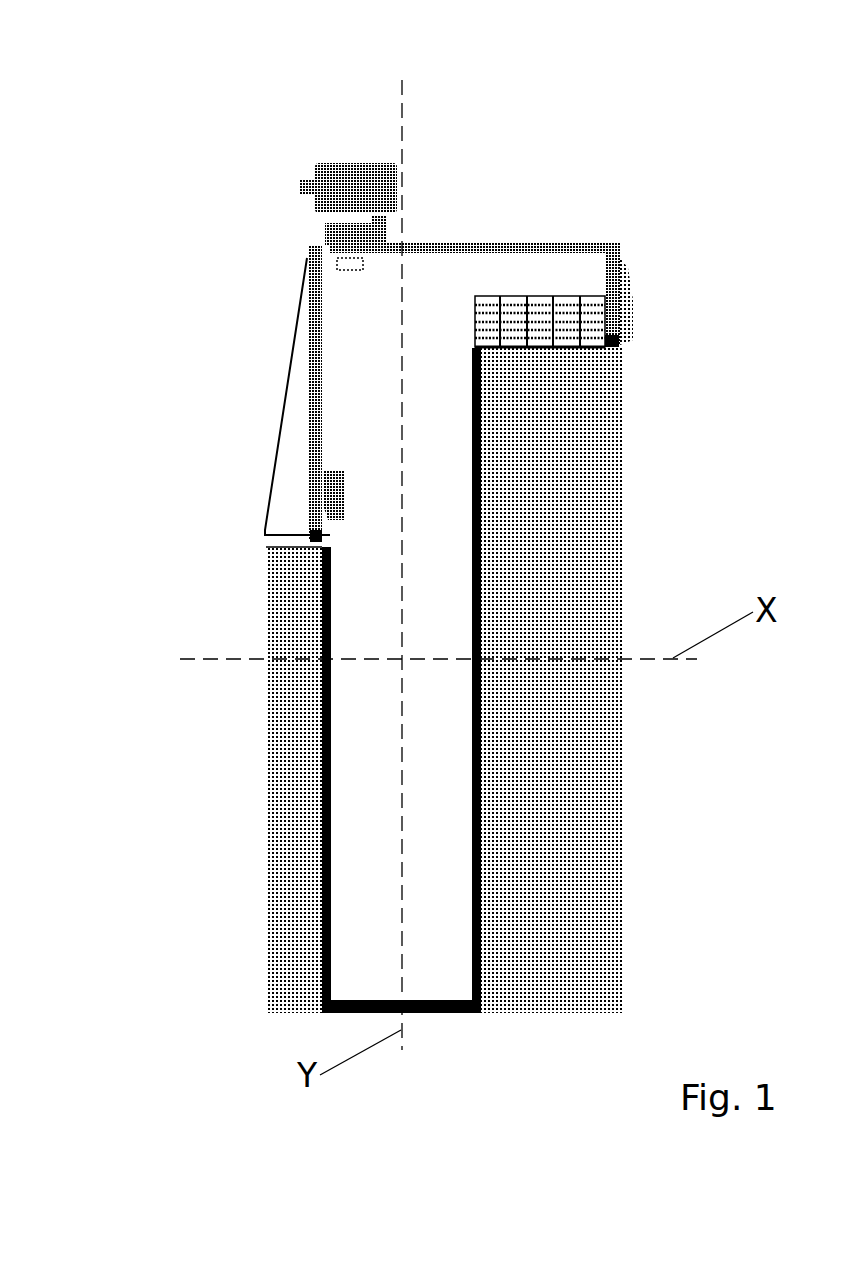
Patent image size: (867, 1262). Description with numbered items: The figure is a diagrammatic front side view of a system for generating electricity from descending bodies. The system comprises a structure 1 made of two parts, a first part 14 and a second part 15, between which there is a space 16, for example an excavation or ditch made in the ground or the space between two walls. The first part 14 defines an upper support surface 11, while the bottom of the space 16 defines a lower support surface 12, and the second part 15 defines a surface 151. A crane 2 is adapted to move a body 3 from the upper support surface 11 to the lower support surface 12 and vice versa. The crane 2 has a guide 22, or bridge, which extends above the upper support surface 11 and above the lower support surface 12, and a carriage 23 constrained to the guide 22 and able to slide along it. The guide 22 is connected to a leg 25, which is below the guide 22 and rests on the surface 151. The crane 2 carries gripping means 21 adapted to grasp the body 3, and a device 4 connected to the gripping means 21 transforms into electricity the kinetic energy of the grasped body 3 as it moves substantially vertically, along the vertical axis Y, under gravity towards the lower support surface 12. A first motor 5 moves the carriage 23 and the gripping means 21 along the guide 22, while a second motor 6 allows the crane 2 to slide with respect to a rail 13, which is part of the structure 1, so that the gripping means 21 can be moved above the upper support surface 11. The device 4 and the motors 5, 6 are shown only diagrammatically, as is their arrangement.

The structure 1 is at (414, 680).
The crane 2 is at (405, 272).
The body 3 is at (567, 298).
The device 4 is at (365, 200).
The motor 5 is at (380, 228).
The motor 6 is at (333, 488).
The upper support surface 11 is at (613, 345).
The lower support surface 12 is at (458, 995).
The rail 13 is at (314, 537).
The first part 14 is at (600, 608).
The second part 15 is at (272, 718).
The space 16 is at (457, 780).
The gripping means 21 is at (340, 258).
The guide 22 is at (483, 247).
The carriage 23 is at (353, 235).
The leg 25 is at (318, 448).
The surface 151 is at (290, 548).